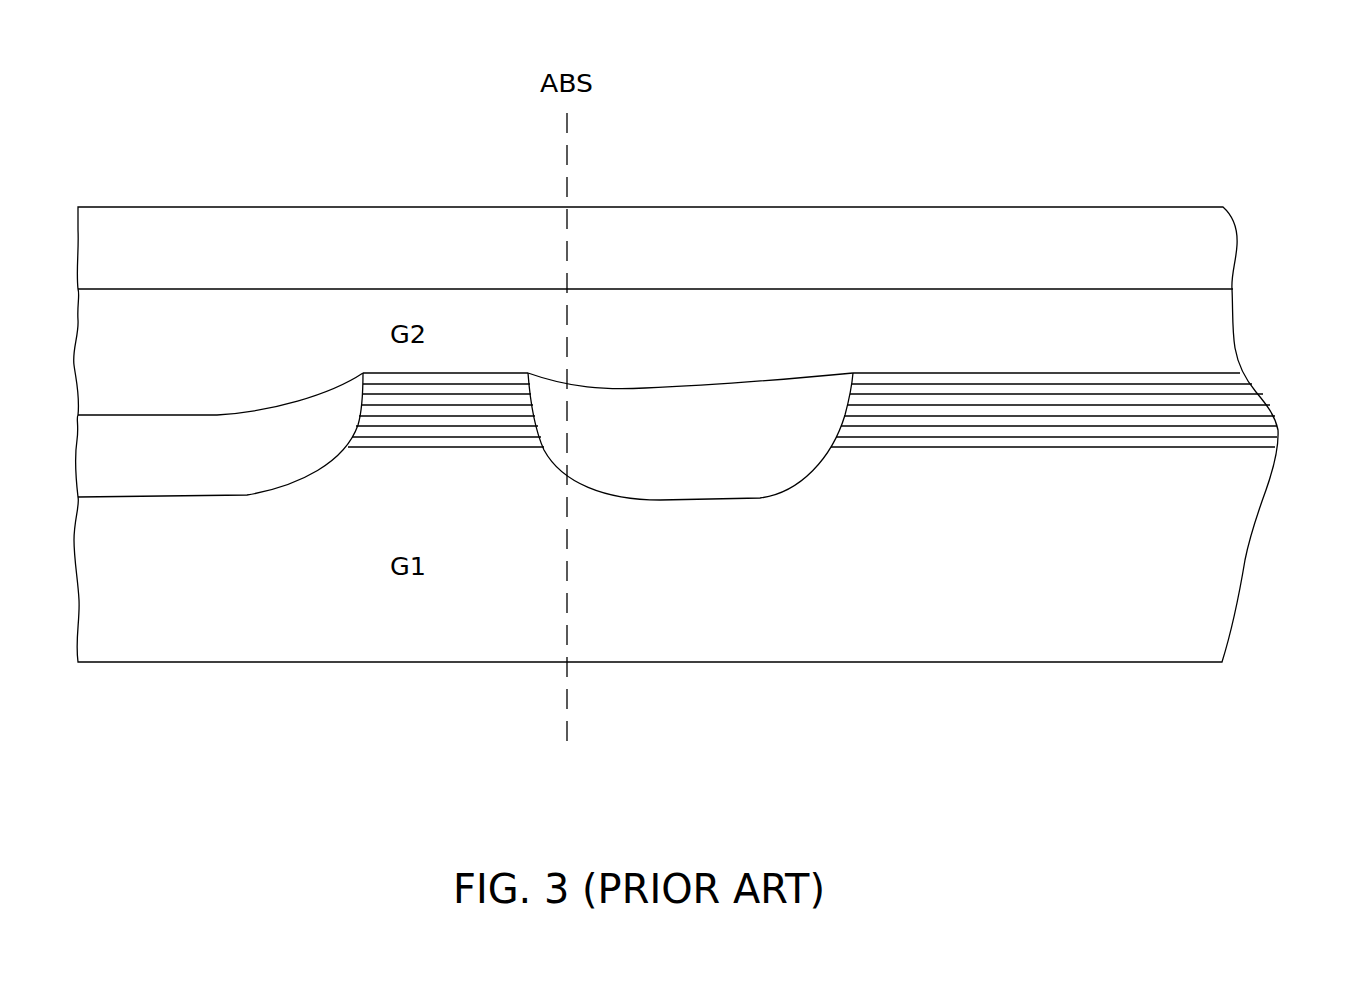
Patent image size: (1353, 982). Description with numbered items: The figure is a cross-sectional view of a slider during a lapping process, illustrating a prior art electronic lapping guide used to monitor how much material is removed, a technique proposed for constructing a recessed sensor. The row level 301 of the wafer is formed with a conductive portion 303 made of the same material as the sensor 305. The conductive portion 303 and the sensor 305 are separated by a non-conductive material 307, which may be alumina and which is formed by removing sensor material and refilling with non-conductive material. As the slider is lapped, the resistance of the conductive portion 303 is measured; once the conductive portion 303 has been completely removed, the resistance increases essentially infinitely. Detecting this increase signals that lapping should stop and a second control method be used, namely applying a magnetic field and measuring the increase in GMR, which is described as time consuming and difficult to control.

The row level 301 is at (852, 82).
The conductive portion 303 is at (1218, 420).
The sensor 305 is at (262, 232).
The non-conductive material 307 is at (675, 450).